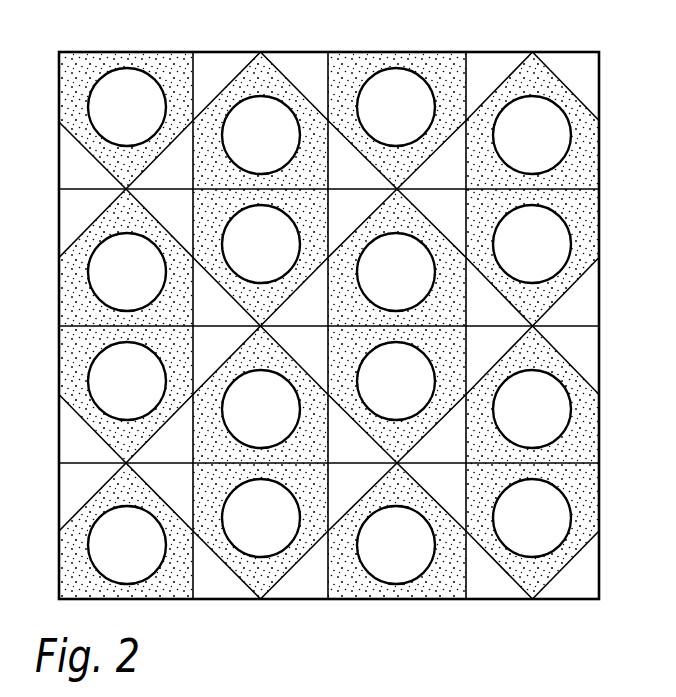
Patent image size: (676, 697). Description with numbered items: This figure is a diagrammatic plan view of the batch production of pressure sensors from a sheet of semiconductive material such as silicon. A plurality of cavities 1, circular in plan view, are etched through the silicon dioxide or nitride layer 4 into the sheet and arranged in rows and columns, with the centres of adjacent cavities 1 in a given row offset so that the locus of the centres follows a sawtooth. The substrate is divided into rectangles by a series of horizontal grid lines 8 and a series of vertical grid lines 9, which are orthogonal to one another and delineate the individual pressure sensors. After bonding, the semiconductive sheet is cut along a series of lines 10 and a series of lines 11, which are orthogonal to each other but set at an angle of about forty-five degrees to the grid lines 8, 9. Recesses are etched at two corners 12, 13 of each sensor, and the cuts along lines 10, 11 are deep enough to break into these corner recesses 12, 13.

The cavity 1 is at (135, 120).
The silicon dioxide or nitride layer 4 is at (73, 570).
The horizontal grid lines 8 is at (403, 52).
The vertical grid lines 9 is at (59, 100).
The cutting lines 10 is at (147, 168).
The cutting lines 11 is at (372, 170).
The corner recess 12 is at (237, 62).
The corner recess 13 is at (315, 62).